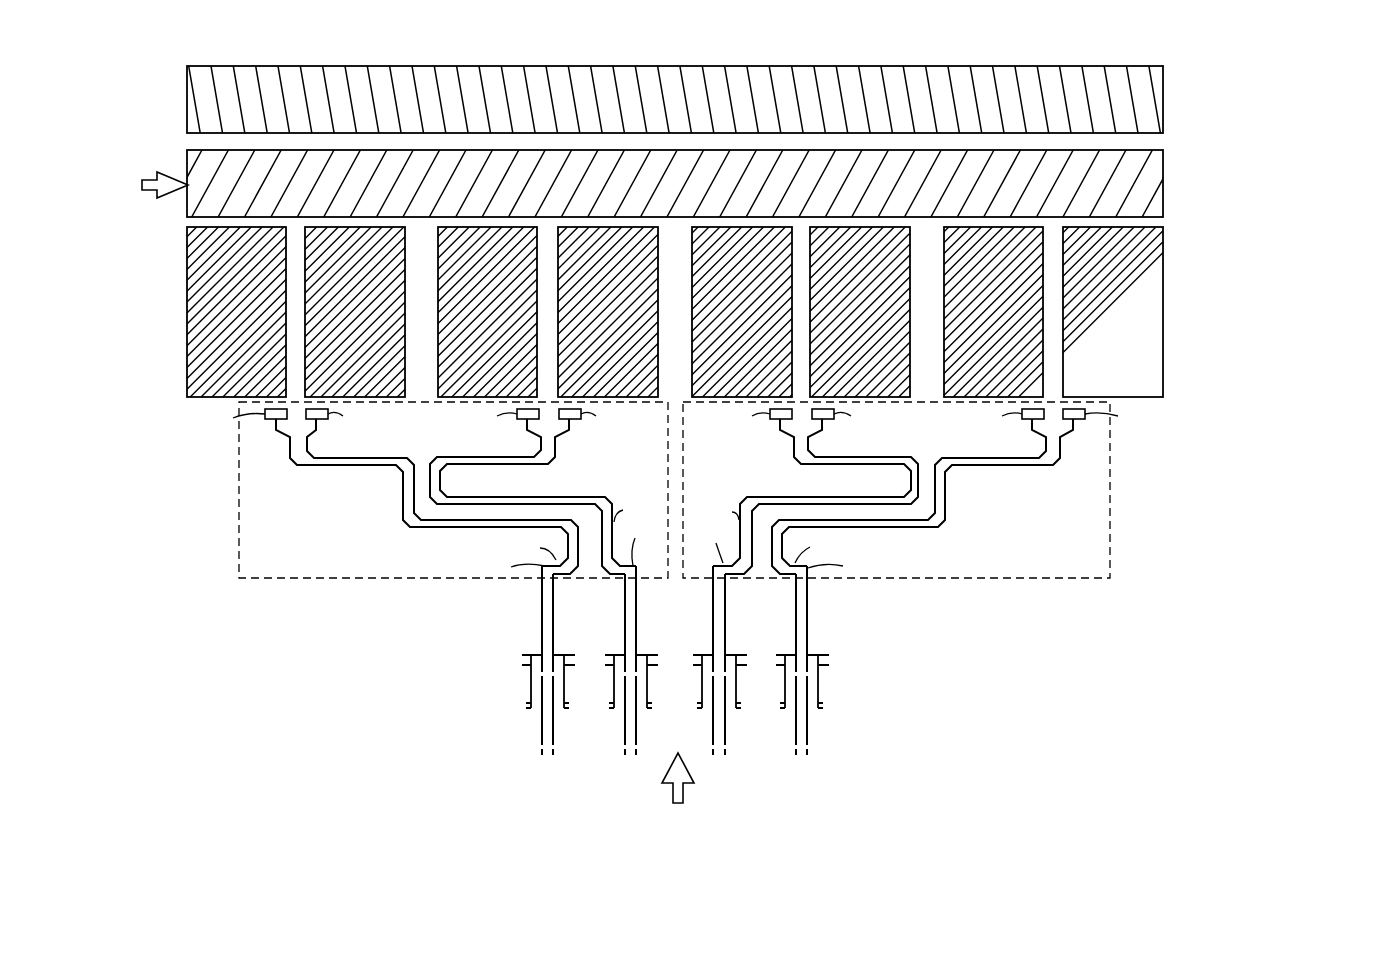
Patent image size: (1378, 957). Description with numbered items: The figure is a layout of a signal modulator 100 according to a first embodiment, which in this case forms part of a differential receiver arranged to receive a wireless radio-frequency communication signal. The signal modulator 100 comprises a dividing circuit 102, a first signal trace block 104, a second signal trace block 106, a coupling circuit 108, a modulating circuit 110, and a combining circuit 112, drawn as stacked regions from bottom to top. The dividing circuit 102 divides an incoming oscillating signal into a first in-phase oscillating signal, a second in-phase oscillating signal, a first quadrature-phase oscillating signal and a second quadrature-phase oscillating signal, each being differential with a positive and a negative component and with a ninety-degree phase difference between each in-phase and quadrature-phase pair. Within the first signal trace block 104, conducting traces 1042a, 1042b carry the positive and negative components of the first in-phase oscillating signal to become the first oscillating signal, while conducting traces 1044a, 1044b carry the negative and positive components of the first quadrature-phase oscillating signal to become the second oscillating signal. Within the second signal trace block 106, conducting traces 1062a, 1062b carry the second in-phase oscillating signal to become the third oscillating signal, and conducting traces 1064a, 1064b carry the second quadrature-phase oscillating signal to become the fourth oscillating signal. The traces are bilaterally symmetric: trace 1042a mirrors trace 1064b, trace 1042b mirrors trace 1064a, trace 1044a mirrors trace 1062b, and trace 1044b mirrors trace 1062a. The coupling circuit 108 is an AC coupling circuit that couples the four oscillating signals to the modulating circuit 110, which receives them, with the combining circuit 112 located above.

The signal modulator 100 is at (1281, 120).
The dividing circuit 102 is at (1183, 579).
The first signal trace block 104 is at (289, 582).
The second signal trace block 106 is at (1112, 483).
The coupling circuit 108 is at (1183, 227).
The modulating circuit 110 is at (1183, 150).
The combining circuit 112 is at (1183, 66).
The conducting trace 1042a is at (402, 500).
The conducting trace 1042b is at (413, 478).
The conducting trace 1044a is at (535, 504).
The conducting trace 1044b is at (605, 497).
The conducting trace 1062a is at (756, 497).
The conducting trace 1062b is at (814, 504).
The conducting trace 1064a is at (936, 485).
The conducting trace 1064b is at (946, 505).